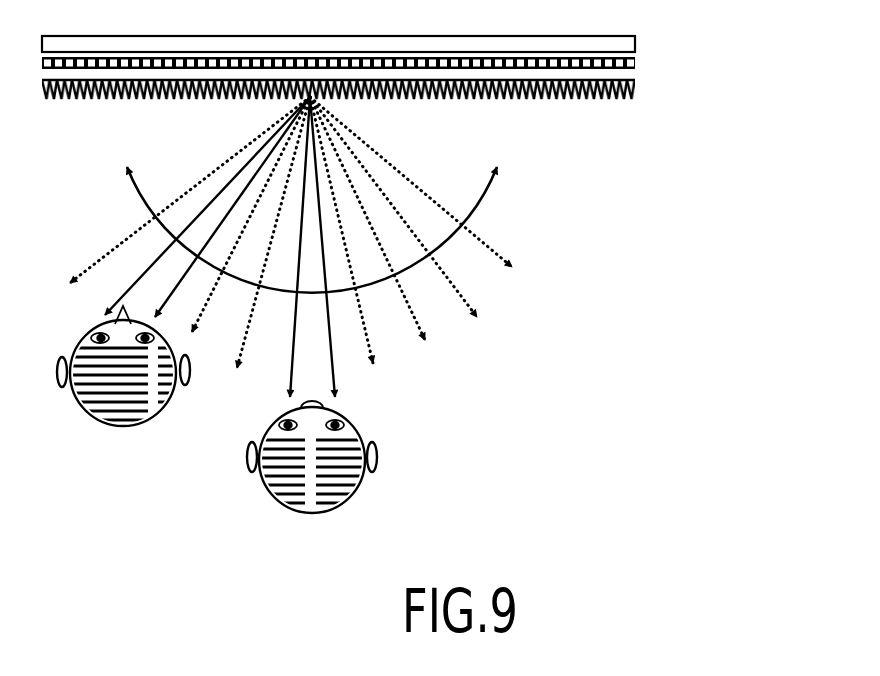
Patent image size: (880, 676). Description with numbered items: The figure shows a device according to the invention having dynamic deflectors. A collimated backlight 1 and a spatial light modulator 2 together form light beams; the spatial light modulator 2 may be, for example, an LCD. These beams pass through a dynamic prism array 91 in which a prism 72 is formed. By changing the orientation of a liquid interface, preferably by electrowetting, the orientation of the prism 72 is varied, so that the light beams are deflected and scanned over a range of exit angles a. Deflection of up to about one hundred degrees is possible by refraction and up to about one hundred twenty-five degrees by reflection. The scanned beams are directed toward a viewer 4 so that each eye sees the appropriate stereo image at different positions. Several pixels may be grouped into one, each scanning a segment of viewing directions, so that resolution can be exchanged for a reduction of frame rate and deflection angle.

The collimated backlight 1 is at (640, 40).
The spatial light modulator 2 is at (640, 61).
The prism 72 is at (92, 102).
The dynamic prism array 91 is at (636, 92).
The viewer 4 is at (234, 409).
The exit angle a is at (327, 223).